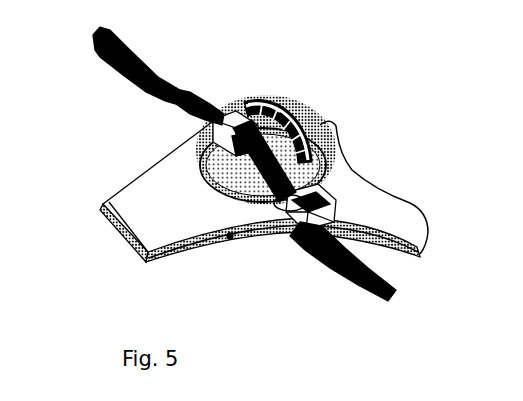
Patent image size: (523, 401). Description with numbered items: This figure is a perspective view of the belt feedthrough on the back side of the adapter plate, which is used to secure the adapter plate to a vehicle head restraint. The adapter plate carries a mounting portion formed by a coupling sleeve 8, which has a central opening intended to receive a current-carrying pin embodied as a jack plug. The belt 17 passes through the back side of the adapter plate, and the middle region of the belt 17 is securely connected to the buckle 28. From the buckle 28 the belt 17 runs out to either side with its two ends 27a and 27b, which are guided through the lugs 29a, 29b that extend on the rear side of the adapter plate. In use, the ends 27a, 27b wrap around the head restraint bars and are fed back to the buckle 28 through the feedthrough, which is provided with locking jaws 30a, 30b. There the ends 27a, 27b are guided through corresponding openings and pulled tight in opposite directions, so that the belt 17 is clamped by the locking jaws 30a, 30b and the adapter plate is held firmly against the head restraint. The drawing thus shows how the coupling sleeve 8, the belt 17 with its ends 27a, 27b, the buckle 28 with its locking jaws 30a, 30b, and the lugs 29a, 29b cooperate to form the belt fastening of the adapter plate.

The coupling sleeve 8 is at (163, 207).
The belt 17 is at (231, 157).
The belt end 27a is at (93, 42).
The belt end 27b is at (361, 261).
The buckle 28 is at (335, 102).
The lug 29a is at (297, 197).
The lug 29b is at (220, 140).
The locking jaw 30a is at (320, 150).
The locking jaw 30b is at (263, 100).